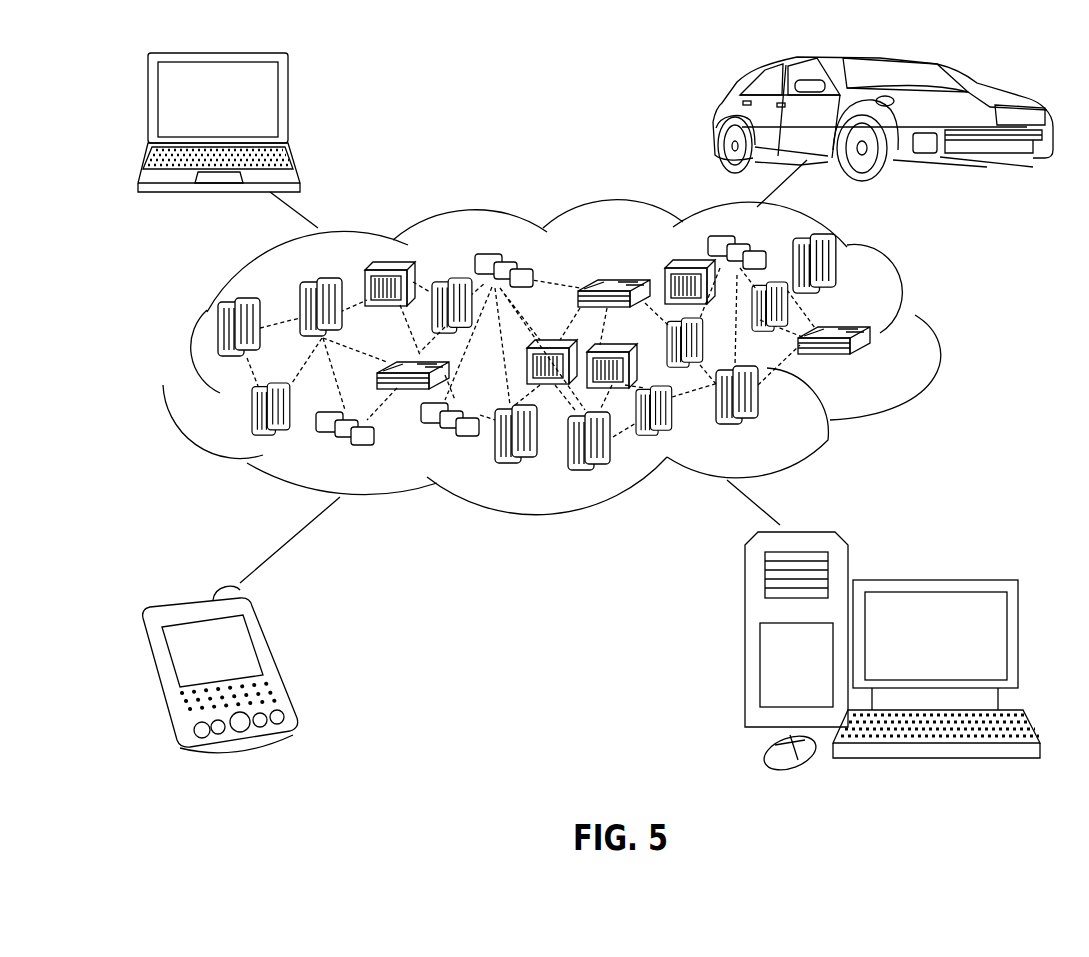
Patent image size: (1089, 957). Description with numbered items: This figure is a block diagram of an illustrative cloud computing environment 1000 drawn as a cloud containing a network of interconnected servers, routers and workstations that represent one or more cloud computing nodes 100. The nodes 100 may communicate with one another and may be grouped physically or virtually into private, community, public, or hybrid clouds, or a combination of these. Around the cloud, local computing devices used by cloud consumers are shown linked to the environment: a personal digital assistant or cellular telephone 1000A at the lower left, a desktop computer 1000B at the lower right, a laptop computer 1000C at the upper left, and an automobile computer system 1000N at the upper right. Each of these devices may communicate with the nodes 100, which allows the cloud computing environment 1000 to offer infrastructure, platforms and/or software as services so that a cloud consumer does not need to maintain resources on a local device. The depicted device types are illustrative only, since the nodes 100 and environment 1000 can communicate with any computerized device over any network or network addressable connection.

The laptop computer 1000C is at (288, 103).
The automobile computer system 1000N is at (713, 122).
The cloud computing environment 1000 is at (935, 337).
The cloud computing nodes 100 is at (889, 364).
The personal digital assistant (PDA) or cellular telephone 1000A is at (273, 661).
The desktop computer 1000B is at (930, 580).